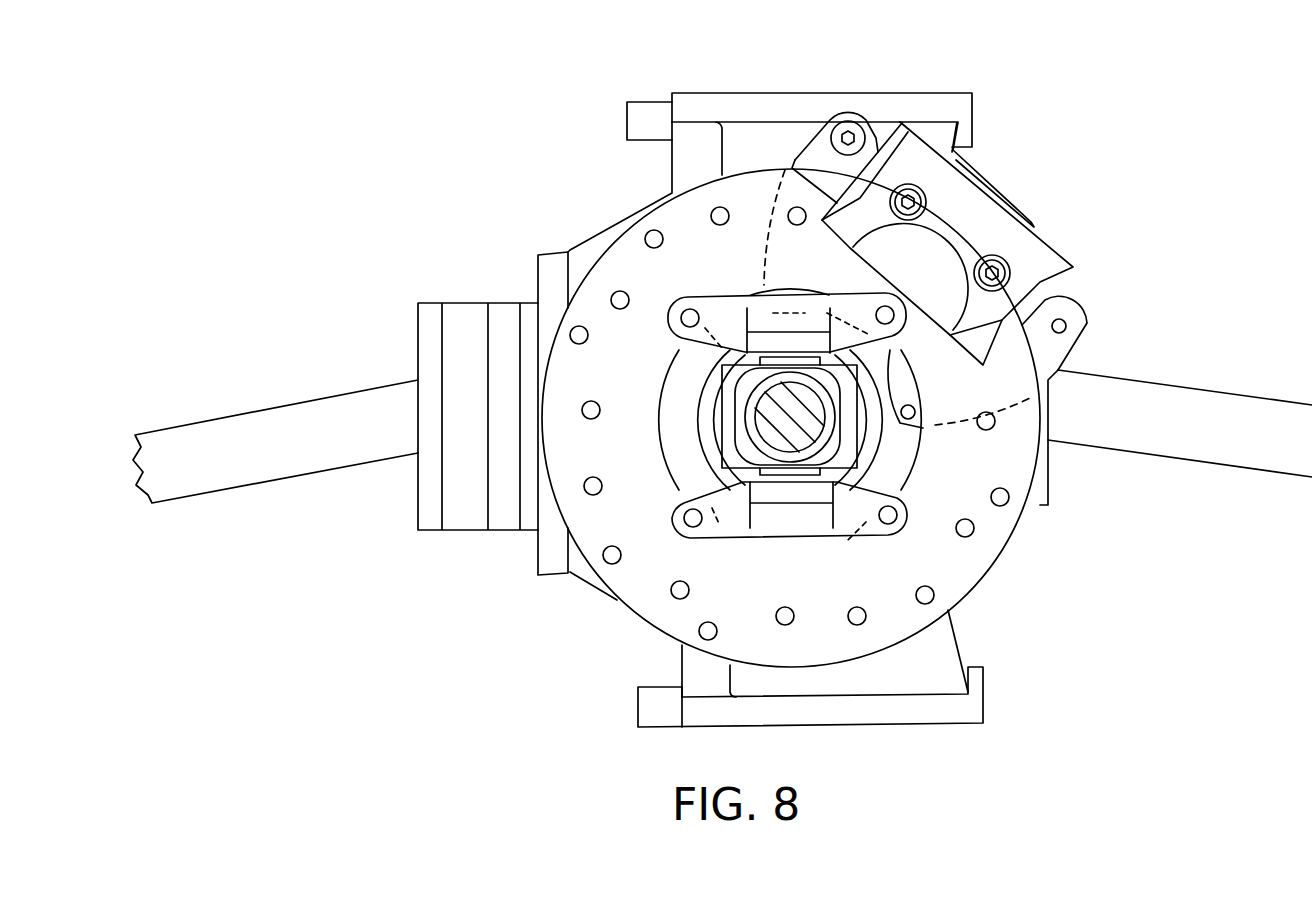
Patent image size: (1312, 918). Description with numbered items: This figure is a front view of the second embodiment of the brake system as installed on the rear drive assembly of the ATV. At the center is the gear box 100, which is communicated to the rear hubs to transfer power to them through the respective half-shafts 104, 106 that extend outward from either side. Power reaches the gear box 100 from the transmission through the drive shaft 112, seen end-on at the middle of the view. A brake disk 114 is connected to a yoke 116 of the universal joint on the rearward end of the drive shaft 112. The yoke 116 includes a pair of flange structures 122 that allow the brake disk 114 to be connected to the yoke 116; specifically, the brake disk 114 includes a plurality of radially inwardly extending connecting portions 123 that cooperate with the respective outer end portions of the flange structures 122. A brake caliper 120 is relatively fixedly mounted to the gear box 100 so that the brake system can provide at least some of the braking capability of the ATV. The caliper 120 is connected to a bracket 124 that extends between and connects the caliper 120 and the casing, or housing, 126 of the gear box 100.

The gear box 100 is at (590, 245).
The half-shaft 104 is at (1242, 413).
The half-shaft 106 is at (230, 468).
The drive shaft 112 is at (777, 413).
The brake disk 114 is at (952, 567).
The yoke 116 is at (722, 390).
The brake caliper 120 is at (1040, 245).
The flange structures 122 is at (727, 320).
The connecting portions 123 is at (680, 332).
The bracket 124 is at (1087, 323).
The casing 126 is at (703, 106).